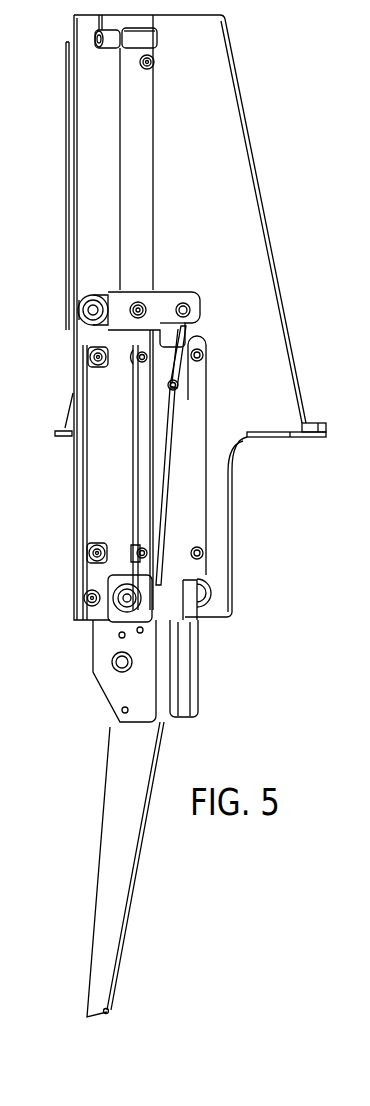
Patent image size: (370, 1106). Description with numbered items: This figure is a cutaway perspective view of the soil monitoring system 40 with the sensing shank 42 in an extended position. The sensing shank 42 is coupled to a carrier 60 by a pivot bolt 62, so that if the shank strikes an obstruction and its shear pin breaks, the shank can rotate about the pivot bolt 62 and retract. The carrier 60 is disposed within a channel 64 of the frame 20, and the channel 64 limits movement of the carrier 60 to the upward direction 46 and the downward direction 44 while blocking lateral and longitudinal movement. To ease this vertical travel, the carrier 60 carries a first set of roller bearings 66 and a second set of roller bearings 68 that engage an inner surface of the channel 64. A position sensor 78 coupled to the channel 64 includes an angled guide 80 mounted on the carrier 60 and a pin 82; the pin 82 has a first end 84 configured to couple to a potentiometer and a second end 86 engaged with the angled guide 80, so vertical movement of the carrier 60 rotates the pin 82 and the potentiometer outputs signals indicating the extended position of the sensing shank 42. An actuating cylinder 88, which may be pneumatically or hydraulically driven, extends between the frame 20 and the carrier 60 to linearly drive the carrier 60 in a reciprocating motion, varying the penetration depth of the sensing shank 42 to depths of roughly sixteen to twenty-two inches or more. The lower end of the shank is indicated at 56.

The frame 20 is at (257, 159).
The soil monitoring system 40 is at (285, 114).
The sensing shank 42 is at (116, 944).
The downward direction 44 is at (32, 552).
The upward direction 46 is at (32, 434).
The arm end 56 is at (94, 1018).
The carrier 60 is at (195, 432).
The pivot bolt 62 is at (116, 667).
The channel 64 is at (83, 29).
The first set of roller bearings 66 is at (86, 314).
The second set of roller bearings 68 is at (200, 302).
The position sensor 78 is at (224, 355).
The angled guide 80 is at (170, 483).
The pin 82 is at (206, 358).
The first end 84 is at (178, 384).
The second end 86 is at (186, 340).
The actuating cylinder 88 is at (143, 132).